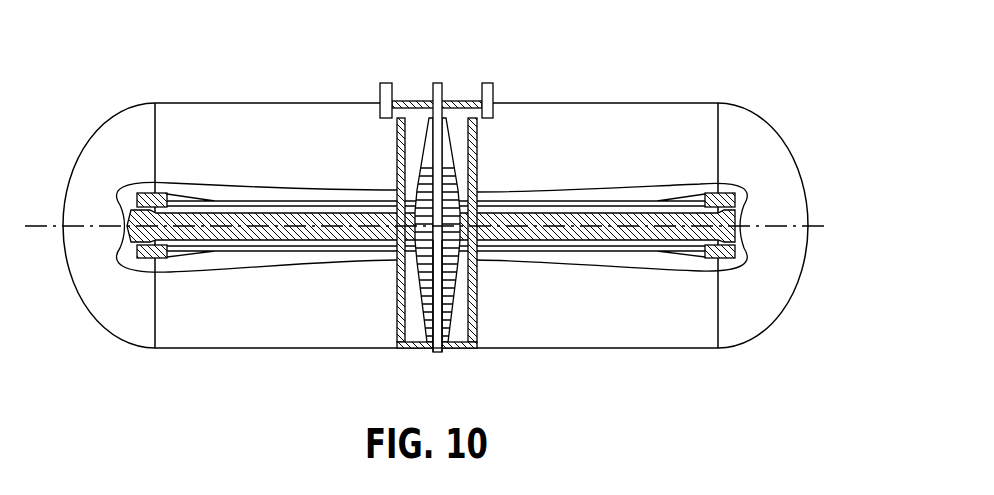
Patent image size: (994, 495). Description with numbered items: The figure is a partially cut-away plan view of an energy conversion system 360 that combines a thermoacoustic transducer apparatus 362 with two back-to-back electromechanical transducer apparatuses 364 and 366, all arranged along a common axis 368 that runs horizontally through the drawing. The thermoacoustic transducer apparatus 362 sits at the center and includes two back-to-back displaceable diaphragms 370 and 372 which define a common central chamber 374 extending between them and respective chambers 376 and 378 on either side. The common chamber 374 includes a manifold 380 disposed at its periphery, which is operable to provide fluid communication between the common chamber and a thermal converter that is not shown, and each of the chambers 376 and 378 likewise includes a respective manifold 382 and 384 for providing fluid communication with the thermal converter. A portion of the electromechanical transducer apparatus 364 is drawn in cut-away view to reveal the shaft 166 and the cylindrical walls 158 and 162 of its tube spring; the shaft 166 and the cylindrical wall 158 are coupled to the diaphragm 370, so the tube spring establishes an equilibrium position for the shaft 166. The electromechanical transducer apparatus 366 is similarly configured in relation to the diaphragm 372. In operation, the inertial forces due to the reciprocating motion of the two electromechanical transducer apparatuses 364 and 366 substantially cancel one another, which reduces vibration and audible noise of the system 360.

The energy conversion system 360 is at (159, 66).
The thermoacoustic transducer apparatus 362 is at (436, 361).
The electromechanical transducer apparatus 364 is at (772, 128).
The electromechanical transducer apparatus 366 is at (105, 124).
The common axis 368 is at (50, 225).
The displaceable diaphragm 370 is at (447, 344).
The displaceable diaphragm 372 is at (431, 344).
The common central chamber 374 is at (434, 292).
The chamber 376 is at (462, 300).
The chamber 378 is at (412, 284).
The manifold 380 is at (437, 83).
The manifold 382 is at (490, 83).
The manifold 384 is at (385, 83).
The cylindrical wall 158 is at (479, 192).
The cylindrical wall 162 is at (490, 202).
The shaft 166 is at (588, 214).